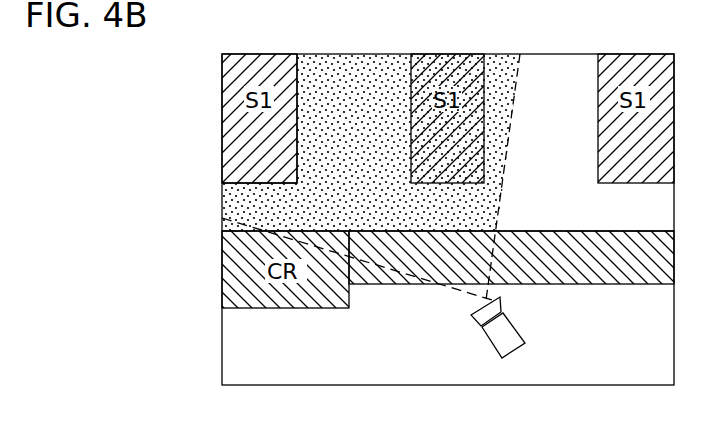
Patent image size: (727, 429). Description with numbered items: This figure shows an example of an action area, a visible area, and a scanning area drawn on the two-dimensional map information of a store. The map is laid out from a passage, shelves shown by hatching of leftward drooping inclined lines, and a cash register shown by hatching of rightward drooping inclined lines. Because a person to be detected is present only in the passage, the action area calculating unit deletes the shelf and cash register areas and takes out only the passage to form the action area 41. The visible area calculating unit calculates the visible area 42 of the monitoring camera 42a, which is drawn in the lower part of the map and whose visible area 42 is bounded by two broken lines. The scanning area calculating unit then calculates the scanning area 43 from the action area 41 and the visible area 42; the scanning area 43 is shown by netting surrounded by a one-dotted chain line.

The action area 41 is at (554, 88).
The visible area 42 is at (436, 300).
The monitoring camera 42a is at (510, 358).
The scanning area 43 is at (222, 197).